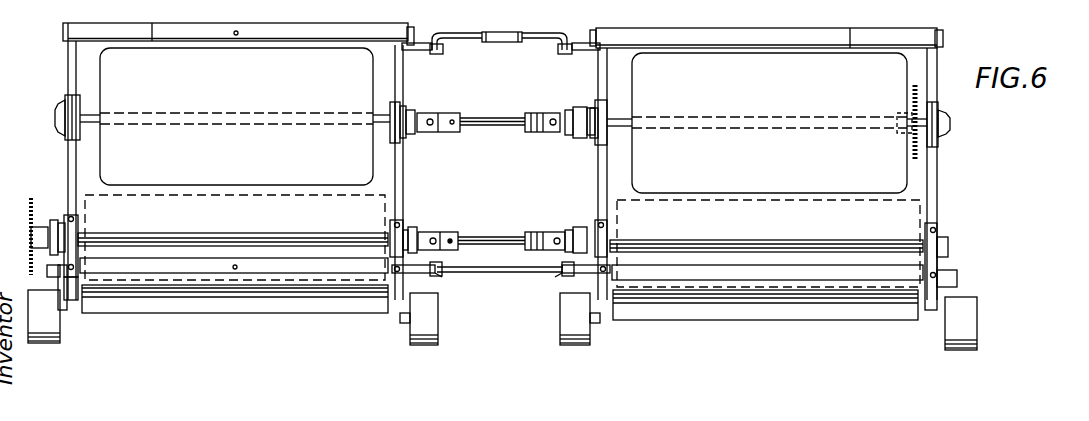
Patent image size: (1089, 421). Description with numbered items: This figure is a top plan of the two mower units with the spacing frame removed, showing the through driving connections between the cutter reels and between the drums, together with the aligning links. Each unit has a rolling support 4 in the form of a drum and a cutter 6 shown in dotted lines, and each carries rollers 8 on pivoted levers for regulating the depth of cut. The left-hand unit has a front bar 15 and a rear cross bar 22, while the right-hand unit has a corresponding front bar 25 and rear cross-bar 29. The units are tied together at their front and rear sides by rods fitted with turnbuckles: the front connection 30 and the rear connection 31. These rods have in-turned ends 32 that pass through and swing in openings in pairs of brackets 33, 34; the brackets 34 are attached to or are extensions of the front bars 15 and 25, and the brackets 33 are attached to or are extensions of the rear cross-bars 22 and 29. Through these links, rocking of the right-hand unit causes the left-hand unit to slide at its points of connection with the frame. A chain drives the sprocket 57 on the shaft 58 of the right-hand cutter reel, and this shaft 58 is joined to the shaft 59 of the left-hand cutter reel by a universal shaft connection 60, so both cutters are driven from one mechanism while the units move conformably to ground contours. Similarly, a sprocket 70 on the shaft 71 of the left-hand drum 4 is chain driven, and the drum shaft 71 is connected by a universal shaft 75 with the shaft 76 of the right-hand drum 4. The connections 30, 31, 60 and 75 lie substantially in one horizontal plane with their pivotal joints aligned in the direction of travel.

The rolling support 4 is at (122, 60).
The cutter 6 is at (263, 195).
The rollers 8 is at (44, 345).
The front bar 15 is at (779, 270).
The cross bar 22 is at (760, 36).
The front bar 25 is at (183, 266).
The cross-bar 29 is at (286, 36).
The front connection 30 is at (500, 275).
The rear connection 31 is at (478, 33).
The in-turned ends 32 is at (437, 52).
The brackets 33 is at (421, 43).
The brackets 34 is at (440, 277).
The sprocket 57 is at (33, 200).
The shaft 58 is at (181, 237).
The shaft 59 is at (731, 242).
The universal shaft connection 60 is at (495, 237).
The sprocket 70 is at (916, 90).
The shaft 71 is at (623, 118).
The universal shaft 75 is at (489, 118).
The shaft 76 is at (382, 118).